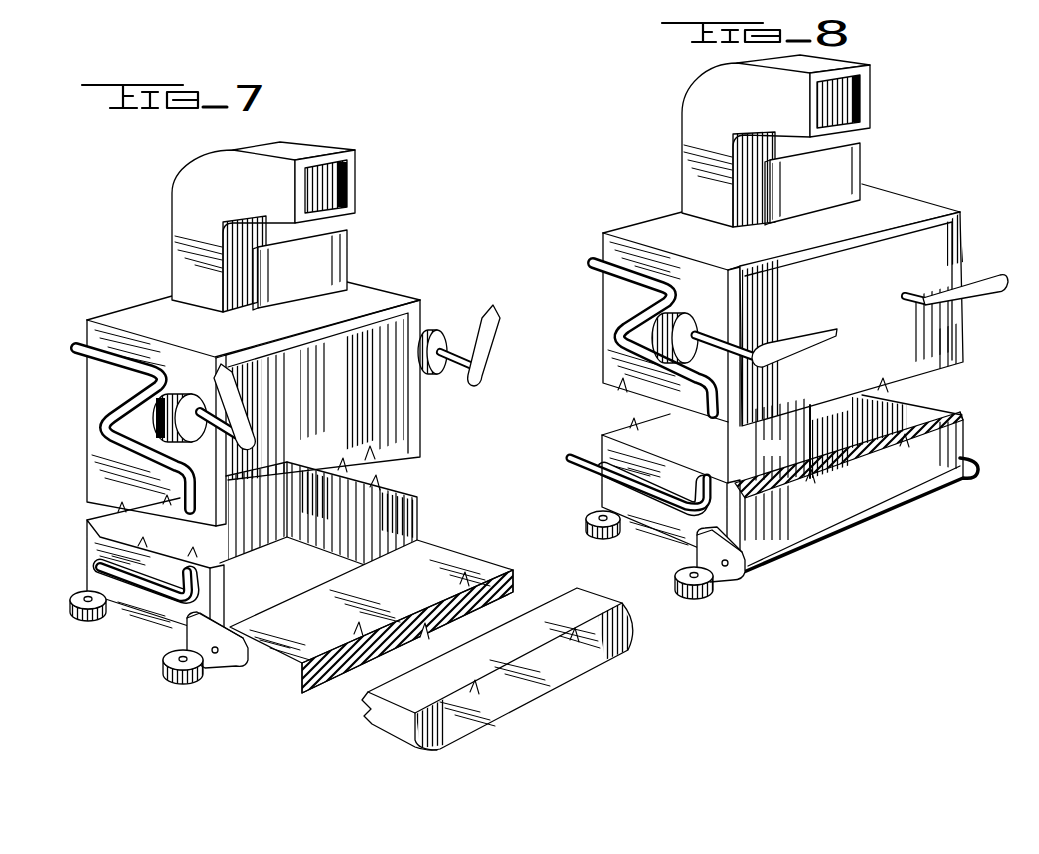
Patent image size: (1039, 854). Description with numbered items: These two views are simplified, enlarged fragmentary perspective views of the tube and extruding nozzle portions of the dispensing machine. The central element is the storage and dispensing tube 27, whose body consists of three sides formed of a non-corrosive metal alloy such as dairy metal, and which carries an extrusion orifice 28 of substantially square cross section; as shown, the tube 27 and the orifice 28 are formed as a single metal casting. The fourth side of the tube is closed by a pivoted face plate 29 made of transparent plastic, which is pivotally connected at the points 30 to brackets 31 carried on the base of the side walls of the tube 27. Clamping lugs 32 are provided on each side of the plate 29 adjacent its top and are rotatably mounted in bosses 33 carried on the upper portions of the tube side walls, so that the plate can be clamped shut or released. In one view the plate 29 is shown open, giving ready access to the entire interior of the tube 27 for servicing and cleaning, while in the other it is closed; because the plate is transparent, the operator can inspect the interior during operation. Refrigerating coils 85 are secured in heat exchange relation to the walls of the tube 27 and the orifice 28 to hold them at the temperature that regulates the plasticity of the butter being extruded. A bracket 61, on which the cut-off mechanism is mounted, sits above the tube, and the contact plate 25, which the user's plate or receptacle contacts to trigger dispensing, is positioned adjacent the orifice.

In FIG. 7, the bracket 61 is at (263, 227).
In FIG. 8, the bracket 61 is at (776, 141).
In FIG. 7, the extrusion orifice 28 is at (355, 185).
In FIG. 8, the extrusion orifice 28 is at (867, 100).
In FIG. 7, the contact plate 25 is at (300, 270).
In FIG. 8, the contact plate 25 is at (812, 184).
In FIG. 7, the refrigerating coils 85 is at (95, 566).
In FIG. 8, the refrigerating coils 85 is at (601, 290).
In FIG. 7, the bosses 33 is at (168, 392).
In FIG. 8, the bosses 33 is at (688, 312).
In FIG. 7, the clamping lugs 32 is at (252, 443).
In FIG. 8, the clamping lugs 32 is at (808, 337).
In FIG. 7, the storage and dispensing tube 27 is at (252, 545).
In FIG. 8, the storage and dispensing tube 27 is at (782, 469).
In FIG. 7, the pivoted face plate 29 is at (371, 616).
In FIG. 8, the pivoted face plate 29 is at (851, 319).
In FIG. 7, the brackets 31 is at (180, 640).
In FIG. 8, the brackets 31 is at (702, 555).
In FIG. 7, the pivot points 30 is at (214, 656).
In FIG. 8, the pivot points 30 is at (725, 567).